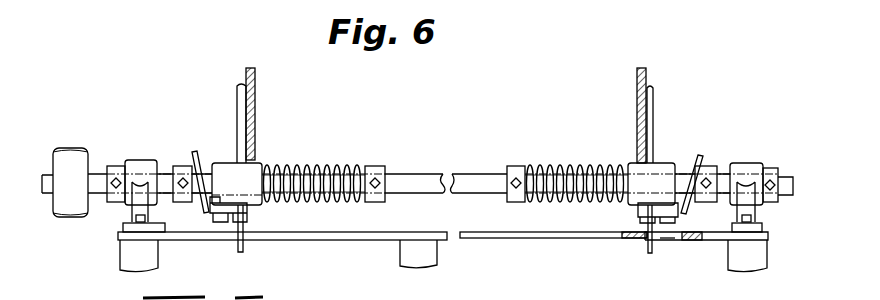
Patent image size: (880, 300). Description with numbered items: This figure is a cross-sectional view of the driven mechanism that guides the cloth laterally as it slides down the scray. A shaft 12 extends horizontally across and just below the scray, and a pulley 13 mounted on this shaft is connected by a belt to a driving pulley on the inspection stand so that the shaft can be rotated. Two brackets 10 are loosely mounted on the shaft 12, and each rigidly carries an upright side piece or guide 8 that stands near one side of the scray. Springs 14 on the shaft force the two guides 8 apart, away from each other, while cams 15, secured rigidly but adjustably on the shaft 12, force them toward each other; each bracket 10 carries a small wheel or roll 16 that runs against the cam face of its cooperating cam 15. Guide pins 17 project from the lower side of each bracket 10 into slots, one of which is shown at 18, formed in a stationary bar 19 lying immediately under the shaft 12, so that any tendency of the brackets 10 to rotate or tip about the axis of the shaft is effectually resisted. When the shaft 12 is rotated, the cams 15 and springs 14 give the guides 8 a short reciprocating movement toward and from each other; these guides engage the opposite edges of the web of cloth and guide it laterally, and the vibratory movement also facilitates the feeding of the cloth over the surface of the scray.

The upright side piece or guide 8 is at (263, 121).
The bracket 10 is at (228, 148).
The shaft 12 is at (417, 178).
The pulley 13 is at (92, 135).
The spring 14 is at (315, 170).
The cam 15 is at (181, 158).
The wheel or roll 16 is at (210, 213).
The guide pin 17 is at (243, 247).
The slot 18 is at (668, 238).
The stationary bar 19 is at (517, 240).